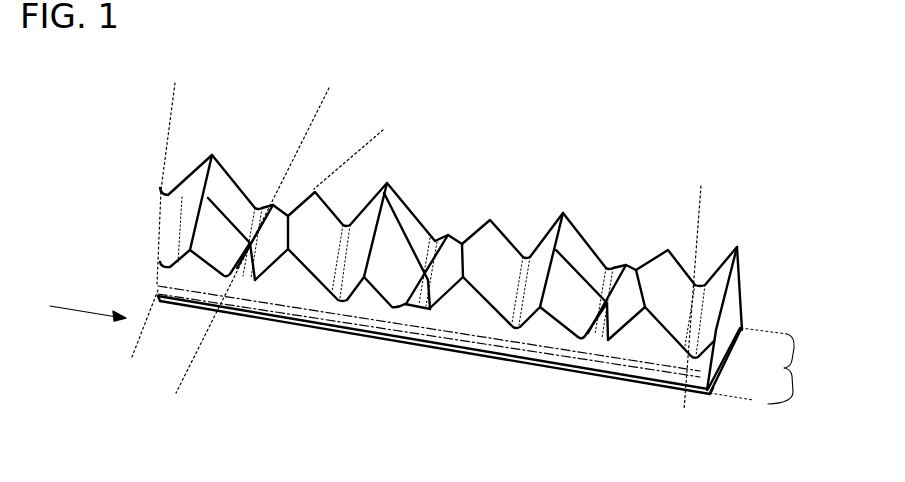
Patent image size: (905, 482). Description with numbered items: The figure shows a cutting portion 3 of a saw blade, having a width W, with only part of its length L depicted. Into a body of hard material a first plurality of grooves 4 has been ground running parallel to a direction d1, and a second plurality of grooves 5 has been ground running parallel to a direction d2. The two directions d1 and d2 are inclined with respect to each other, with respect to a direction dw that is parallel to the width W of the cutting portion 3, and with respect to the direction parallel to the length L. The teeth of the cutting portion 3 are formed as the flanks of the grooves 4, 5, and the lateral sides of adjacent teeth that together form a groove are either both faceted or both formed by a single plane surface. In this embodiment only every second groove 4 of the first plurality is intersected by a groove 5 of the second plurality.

The cutting portion 3 is at (283, 342).
The first plurality of grooves 4 is at (357, 236).
The second plurality of grooves 5 is at (459, 242).
The first groove direction d1 is at (425, 234).
The second groove direction d2 is at (361, 146).
The width direction dw is at (261, 227).
The length L is at (78, 306).
The width W is at (765, 366).